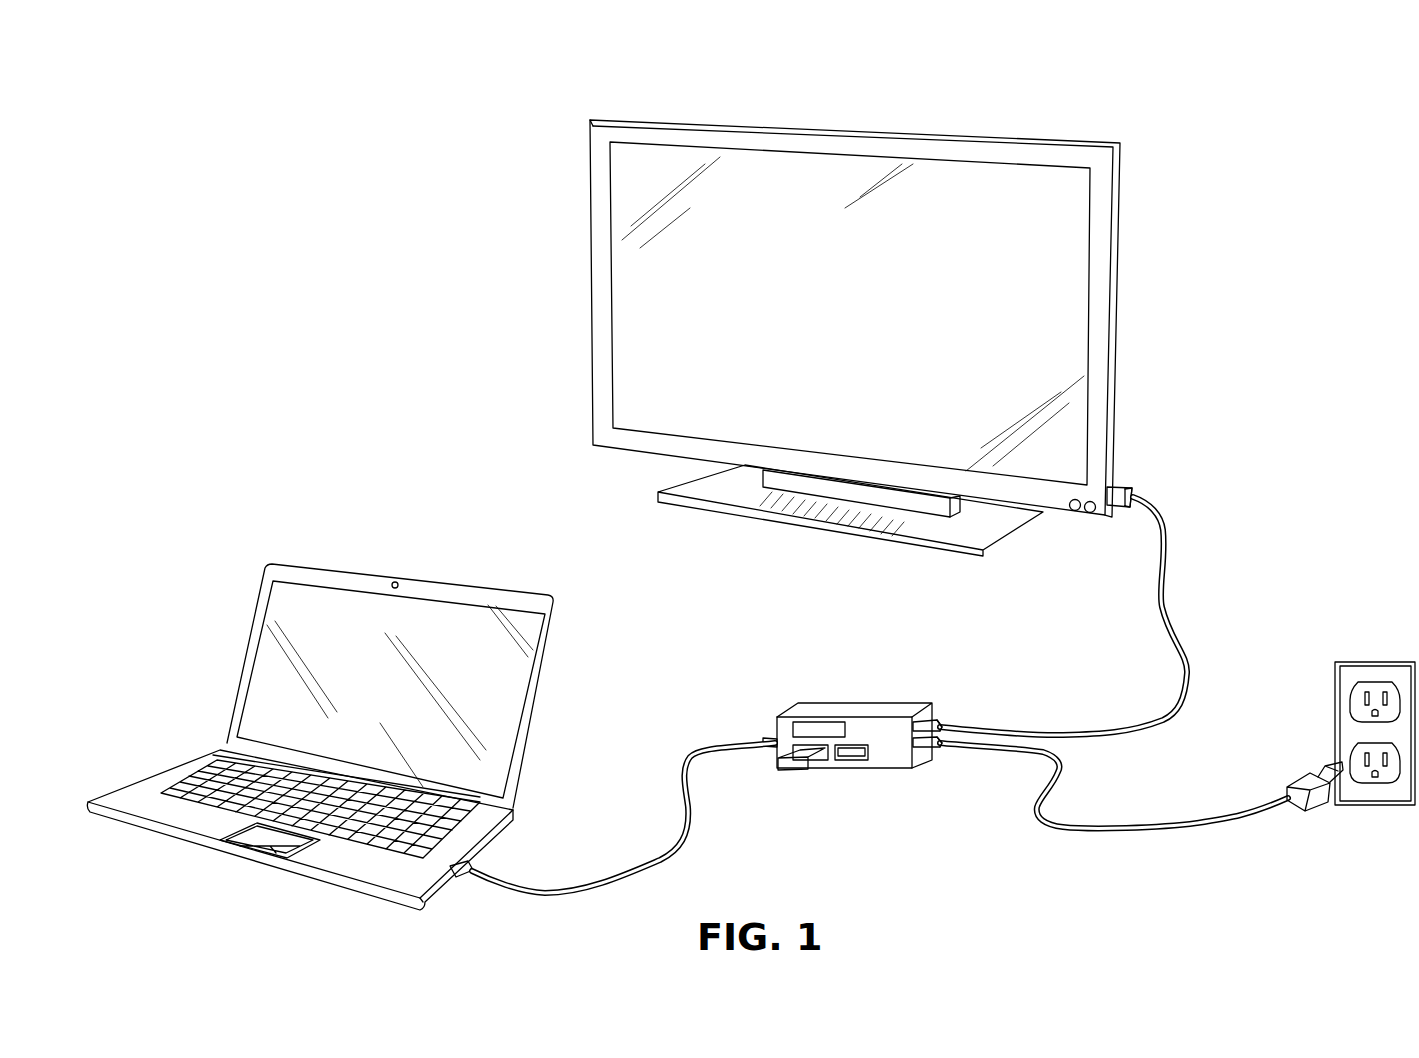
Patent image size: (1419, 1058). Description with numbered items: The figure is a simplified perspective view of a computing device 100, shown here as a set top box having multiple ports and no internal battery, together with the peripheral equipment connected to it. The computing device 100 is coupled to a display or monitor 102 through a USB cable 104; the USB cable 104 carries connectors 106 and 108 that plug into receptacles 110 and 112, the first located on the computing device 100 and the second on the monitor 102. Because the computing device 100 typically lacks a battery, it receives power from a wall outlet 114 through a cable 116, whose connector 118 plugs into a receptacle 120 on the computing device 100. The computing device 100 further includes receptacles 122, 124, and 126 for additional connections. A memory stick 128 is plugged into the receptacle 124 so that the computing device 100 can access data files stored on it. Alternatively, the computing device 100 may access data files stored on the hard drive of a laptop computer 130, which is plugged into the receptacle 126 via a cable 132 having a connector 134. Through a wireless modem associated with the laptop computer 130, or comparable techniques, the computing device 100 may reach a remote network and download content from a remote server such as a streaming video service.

The computing device 100 is at (847, 705).
The monitor 102 is at (1094, 132).
The USB cable 104 is at (1173, 637).
The connector 106 is at (942, 720).
The connector 108 is at (1128, 510).
The receptacle 110 is at (917, 720).
The receptacle 112 is at (1110, 474).
The wall outlet 114 is at (1372, 660).
The cable 116 is at (1170, 833).
The connector 118 is at (941, 747).
The receptacle 120 is at (922, 758).
The receptacle 122 is at (867, 768).
The receptacle 124 is at (825, 762).
The receptacle 126 is at (766, 740).
The memory stick 128 is at (786, 770).
The laptop computer 130 is at (499, 588).
The cable 132 is at (633, 868).
The connector 134 is at (778, 760).